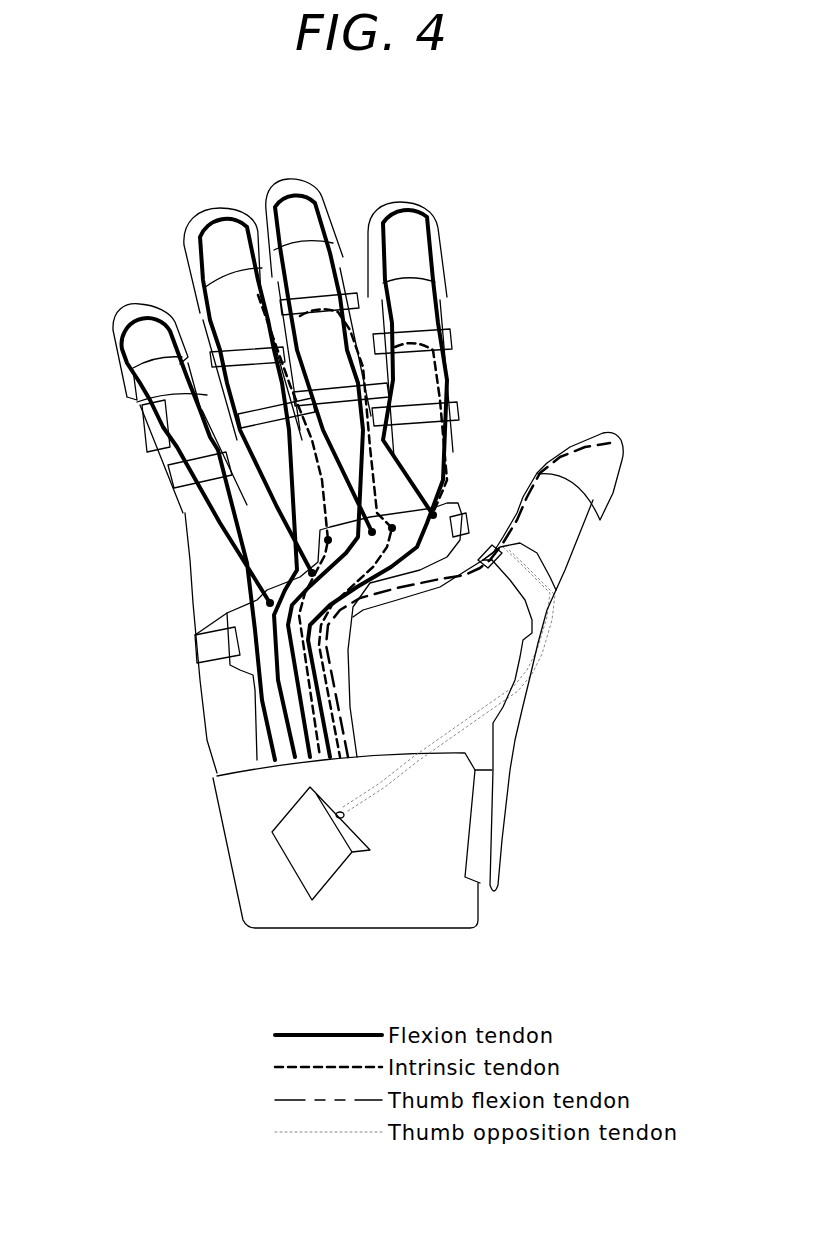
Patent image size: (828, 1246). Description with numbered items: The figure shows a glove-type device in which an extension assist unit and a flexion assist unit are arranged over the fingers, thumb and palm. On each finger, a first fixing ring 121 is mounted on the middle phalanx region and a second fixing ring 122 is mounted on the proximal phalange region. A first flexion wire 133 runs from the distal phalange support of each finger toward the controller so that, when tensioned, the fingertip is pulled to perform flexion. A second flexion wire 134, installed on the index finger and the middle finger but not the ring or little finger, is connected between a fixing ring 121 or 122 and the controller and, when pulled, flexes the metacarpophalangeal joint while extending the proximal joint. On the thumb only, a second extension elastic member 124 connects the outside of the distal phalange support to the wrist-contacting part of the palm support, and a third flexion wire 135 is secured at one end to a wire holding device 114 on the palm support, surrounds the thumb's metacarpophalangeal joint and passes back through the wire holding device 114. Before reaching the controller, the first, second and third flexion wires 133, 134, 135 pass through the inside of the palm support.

The wire holding device 114 is at (335, 880).
The first fixing ring 121 is at (147, 423).
The second fixing ring 122 is at (193, 467).
The second extension elastic member 124 is at (512, 717).
The first flexion wire 133 is at (322, 200).
The second flexion wire 134 is at (375, 462).
The third flexion wire 135 is at (513, 680).